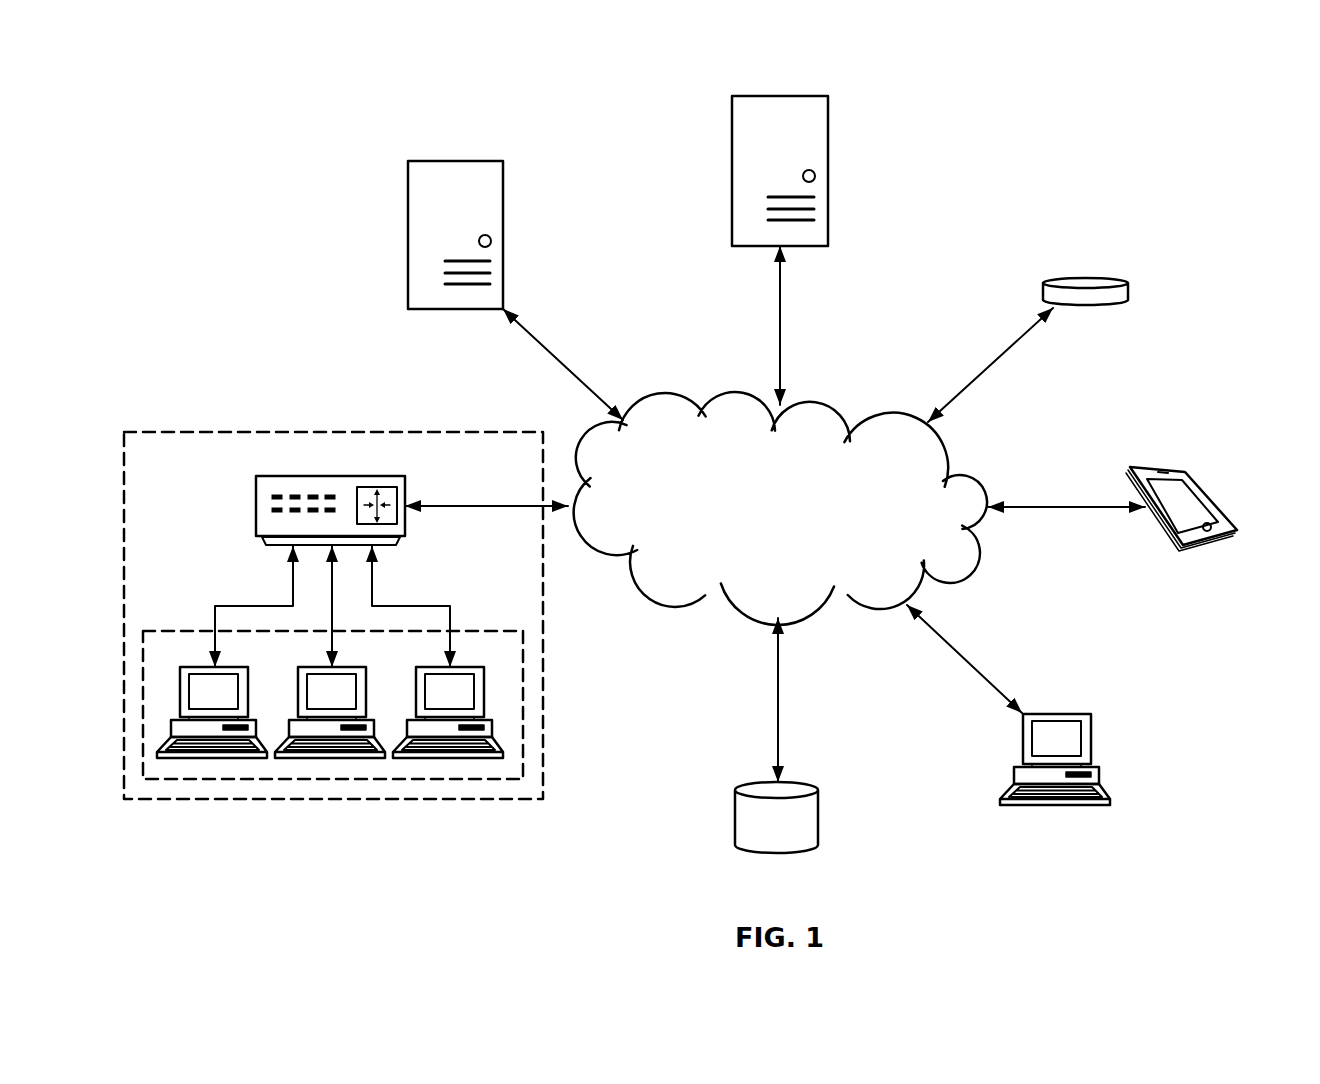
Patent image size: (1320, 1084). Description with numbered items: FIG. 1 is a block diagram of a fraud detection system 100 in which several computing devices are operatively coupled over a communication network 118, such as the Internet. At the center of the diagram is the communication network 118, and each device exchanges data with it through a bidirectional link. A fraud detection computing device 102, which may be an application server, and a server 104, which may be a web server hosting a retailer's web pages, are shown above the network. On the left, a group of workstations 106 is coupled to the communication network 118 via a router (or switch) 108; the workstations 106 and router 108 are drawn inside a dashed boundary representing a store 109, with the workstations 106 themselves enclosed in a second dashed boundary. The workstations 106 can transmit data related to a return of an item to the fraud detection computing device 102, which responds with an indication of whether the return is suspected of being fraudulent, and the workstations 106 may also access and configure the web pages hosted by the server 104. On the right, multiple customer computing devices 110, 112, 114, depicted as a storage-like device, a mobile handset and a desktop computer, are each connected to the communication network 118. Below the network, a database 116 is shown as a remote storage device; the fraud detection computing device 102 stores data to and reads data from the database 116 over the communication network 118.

The fraud detection system 100 is at (1170, 84).
The fraud detection computing device 102 is at (803, 95).
The server 104 is at (432, 160).
The workstation(s) 106 is at (198, 628).
The router 108 is at (283, 476).
The store 109 is at (197, 430).
The customer computing device 110 is at (1100, 280).
The customer computing device 112 is at (1205, 493).
The customer computing device 114 is at (1080, 712).
The database 116 is at (808, 783).
The communication network 118 is at (823, 402).